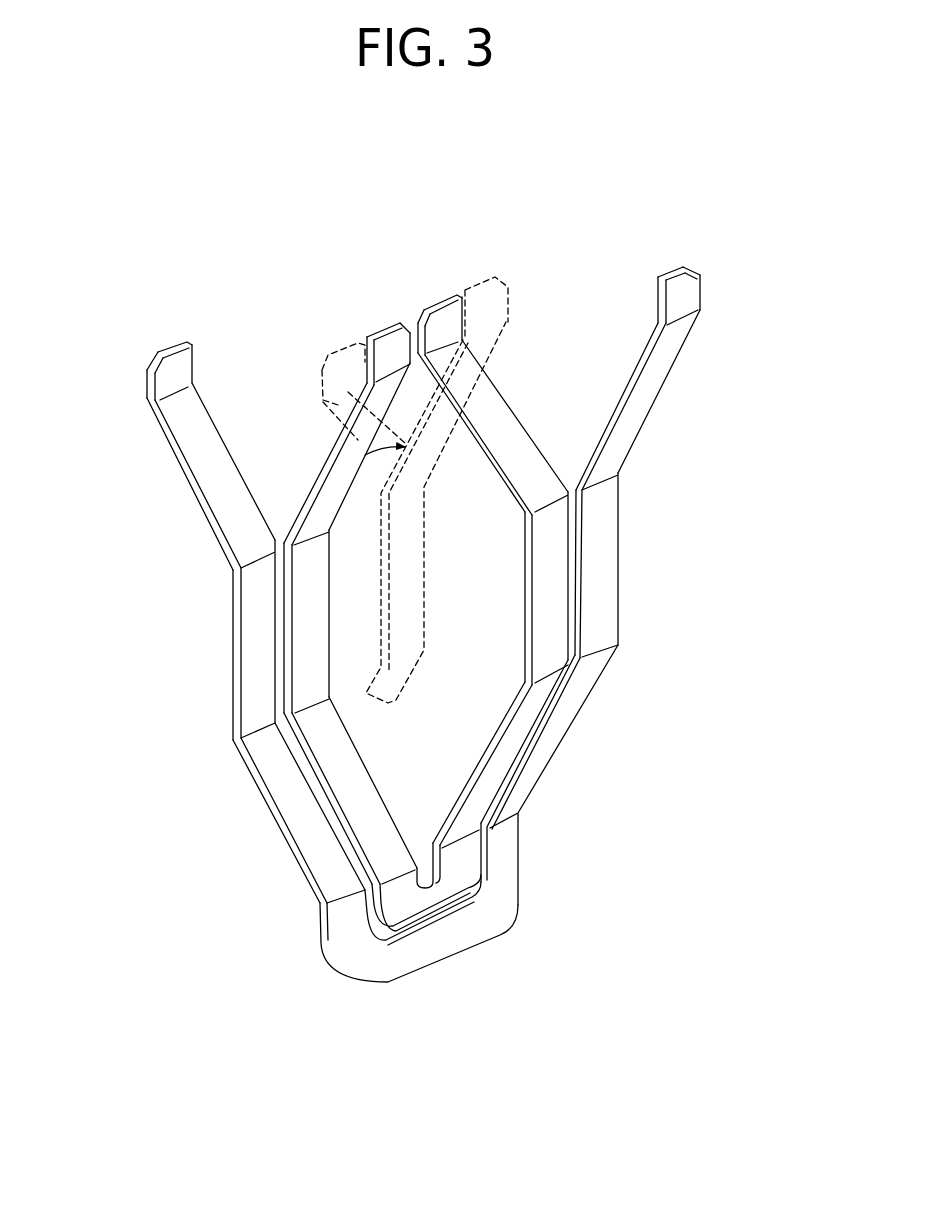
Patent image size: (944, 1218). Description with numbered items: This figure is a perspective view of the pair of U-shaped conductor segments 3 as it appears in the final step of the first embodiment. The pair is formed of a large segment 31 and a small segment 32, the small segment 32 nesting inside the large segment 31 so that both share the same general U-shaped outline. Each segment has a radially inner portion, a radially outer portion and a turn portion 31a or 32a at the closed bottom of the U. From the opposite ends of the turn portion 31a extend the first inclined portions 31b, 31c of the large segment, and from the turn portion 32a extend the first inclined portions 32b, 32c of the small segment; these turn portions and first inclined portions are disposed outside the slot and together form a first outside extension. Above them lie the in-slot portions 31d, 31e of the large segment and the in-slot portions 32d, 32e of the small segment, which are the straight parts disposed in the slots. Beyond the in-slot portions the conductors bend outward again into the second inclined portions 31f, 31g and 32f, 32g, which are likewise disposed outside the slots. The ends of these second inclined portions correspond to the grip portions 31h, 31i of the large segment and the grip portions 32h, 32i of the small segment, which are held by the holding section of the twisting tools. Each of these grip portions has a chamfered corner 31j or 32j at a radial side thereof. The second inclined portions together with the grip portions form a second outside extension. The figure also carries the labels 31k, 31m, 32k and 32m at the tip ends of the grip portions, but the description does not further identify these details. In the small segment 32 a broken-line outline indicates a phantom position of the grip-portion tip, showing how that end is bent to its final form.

The pair of U-shaped conductor segments 3 is at (290, 873).
The large segment 31 is at (421, 608).
The turn portion 31a is at (427, 948).
The first inclined portion 31b is at (293, 817).
The first inclined portion 31c is at (540, 757).
The in-slot portion 31d is at (257, 622).
The in-slot portion 31e is at (600, 575).
The second inclined portion 31f is at (212, 487).
The second inclined portion 31g is at (652, 383).
The grip portion 31h is at (165, 380).
The grip portion 31i is at (690, 295).
The chamfered corner 31j is at (150, 360).
The left tip end of outer member 31k is at (168, 343).
The right tip end of outer member 31m is at (683, 262).
The small segment 32 is at (429, 602).
The turn portion 32a is at (457, 882).
The first inclined portion 32b is at (358, 782).
The first inclined portion 32c is at (508, 753).
The in-slot portion 32d is at (310, 662).
The in-slot portion 32e is at (552, 637).
The second inclined portion 32f is at (333, 480).
The second inclined portion 32g is at (503, 450).
The grip portion 32h is at (390, 347).
The grip portion 32i is at (450, 320).
The chamfered corner 32j is at (408, 322).
The left tip end of inner member 32k is at (380, 338).
The right tip end of inner member 32m is at (448, 317).